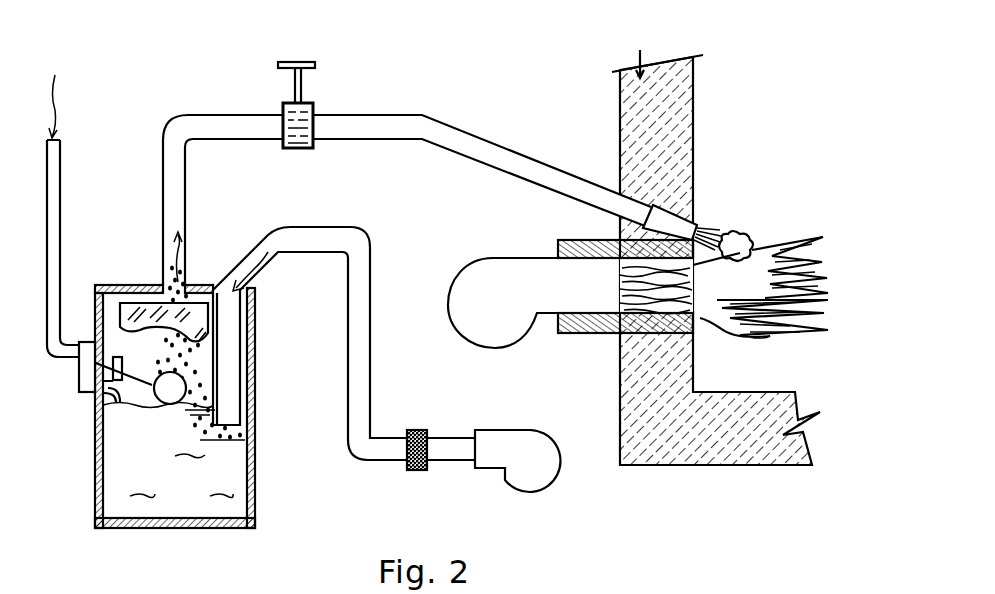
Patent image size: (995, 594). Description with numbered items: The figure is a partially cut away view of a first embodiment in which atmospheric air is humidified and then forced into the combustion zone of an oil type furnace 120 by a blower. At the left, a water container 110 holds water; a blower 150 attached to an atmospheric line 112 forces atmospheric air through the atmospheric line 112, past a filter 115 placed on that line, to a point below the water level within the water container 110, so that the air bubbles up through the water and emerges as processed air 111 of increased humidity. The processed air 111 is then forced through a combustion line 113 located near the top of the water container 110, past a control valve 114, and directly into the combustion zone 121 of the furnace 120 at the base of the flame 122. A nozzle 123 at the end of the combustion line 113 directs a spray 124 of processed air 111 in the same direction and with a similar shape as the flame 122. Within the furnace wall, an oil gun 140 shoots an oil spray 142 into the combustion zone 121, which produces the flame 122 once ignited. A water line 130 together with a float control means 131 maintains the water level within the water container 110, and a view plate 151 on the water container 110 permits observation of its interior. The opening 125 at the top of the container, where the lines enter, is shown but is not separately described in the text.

The water container 110 is at (95, 492).
The processed air 111 is at (196, 275).
The atmospheric line 112 is at (371, 300).
The combustion line 113 is at (240, 113).
The control valve 114 is at (313, 112).
The filter 115 is at (418, 470).
The oil type furnace 120 is at (620, 132).
The combustion zone 121 is at (852, 340).
The flame 122 is at (777, 330).
The nozzle 123 is at (688, 200).
The spray 124 is at (712, 232).
The inlet opening 125 is at (196, 290).
The water line 130 is at (60, 225).
The float control means 131 is at (178, 385).
The oil gun 140 is at (555, 282).
The oil spray 142 is at (692, 310).
The blower 150 is at (505, 430).
The view plate 151 is at (188, 332).